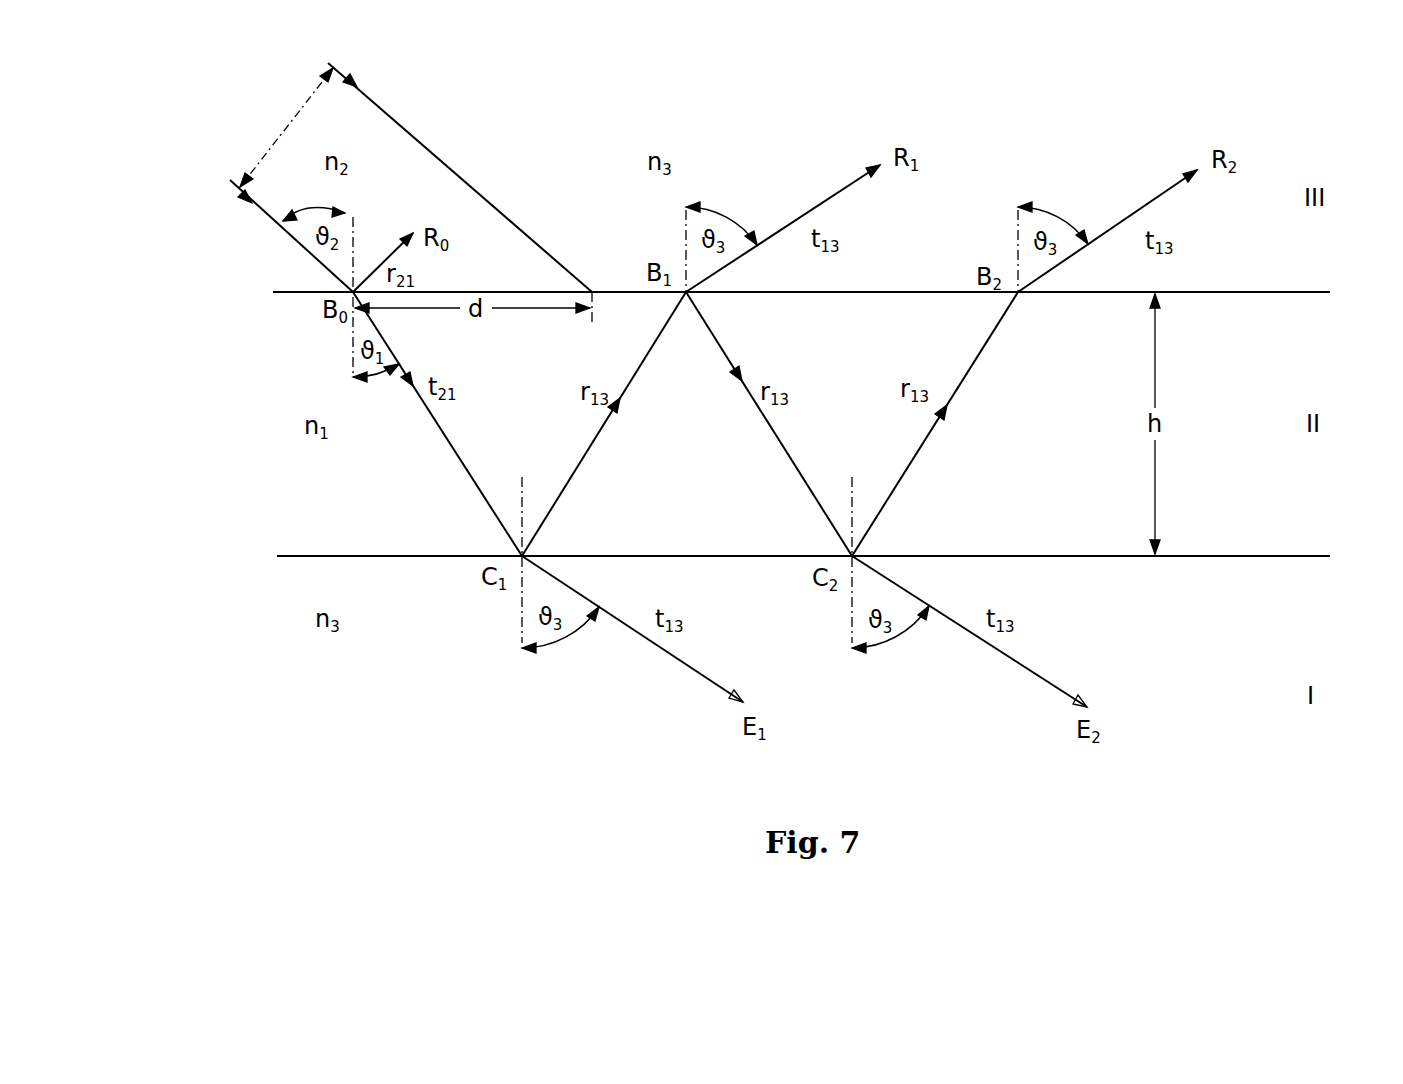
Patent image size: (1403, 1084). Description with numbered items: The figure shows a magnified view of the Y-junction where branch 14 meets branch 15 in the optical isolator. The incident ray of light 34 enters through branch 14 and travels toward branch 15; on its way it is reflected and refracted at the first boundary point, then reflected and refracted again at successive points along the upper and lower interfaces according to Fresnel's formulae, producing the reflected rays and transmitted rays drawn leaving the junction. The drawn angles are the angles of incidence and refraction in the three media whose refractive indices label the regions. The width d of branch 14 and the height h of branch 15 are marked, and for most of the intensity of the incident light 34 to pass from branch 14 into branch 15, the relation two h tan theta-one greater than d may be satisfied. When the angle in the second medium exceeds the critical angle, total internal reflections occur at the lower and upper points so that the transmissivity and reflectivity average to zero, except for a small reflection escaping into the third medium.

The branch 14 is at (368, 172).
The branch 15 is at (423, 412).
The incident ray of light 34 is at (286, 127).